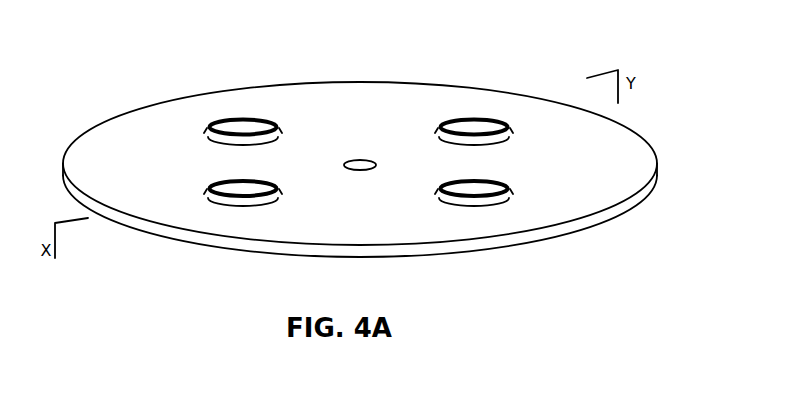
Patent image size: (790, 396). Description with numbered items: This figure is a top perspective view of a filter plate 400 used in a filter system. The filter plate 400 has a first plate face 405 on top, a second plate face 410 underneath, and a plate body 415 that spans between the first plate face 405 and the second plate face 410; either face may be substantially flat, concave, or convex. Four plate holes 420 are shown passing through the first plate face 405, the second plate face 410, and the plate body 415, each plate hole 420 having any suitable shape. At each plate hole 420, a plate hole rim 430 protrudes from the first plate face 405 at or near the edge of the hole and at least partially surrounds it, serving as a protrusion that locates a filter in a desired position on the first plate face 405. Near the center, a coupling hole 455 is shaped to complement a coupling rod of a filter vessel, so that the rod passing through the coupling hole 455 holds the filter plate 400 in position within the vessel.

The filter plate 400 is at (138, 52).
The first plate face 405 is at (118, 136).
The second plate face 410 is at (586, 244).
The plate body 415 is at (427, 249).
The plate hole 420 is at (256, 102).
The plate hole rim 430 is at (238, 122).
The coupling hole 455 is at (366, 158).